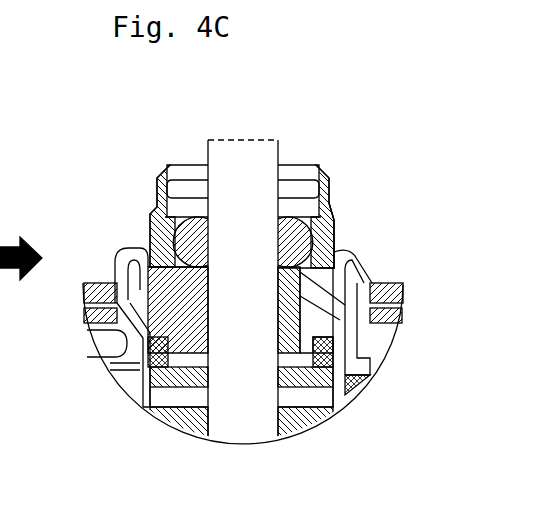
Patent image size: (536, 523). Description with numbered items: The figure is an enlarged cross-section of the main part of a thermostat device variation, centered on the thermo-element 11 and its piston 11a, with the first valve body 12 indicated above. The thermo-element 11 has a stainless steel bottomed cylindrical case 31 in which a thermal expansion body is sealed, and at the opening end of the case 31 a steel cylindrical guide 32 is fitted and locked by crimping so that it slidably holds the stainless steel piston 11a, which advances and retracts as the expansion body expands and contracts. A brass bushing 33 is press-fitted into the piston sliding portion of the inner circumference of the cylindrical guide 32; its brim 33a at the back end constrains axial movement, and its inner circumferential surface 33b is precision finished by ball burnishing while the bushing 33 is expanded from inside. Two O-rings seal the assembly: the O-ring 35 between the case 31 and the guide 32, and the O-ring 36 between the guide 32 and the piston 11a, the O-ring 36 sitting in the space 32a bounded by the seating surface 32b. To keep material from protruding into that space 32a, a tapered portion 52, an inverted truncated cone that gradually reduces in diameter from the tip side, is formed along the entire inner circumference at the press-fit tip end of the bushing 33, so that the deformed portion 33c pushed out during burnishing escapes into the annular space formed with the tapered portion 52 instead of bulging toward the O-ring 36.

The thermo-element 11 is at (356, 392).
The piston 11a is at (255, 158).
The first valve body 12 is at (403, 285).
The bottomed cylindrical case 31 is at (145, 402).
The cylindrical guide 32 is at (293, 166).
The space 32a is at (172, 180).
The seating surface 32b is at (334, 212).
The brass bushing 33 is at (237, 364).
The brim 33a is at (322, 425).
The inner circumferential surface 33b is at (180, 427).
The deformed portion 33c is at (126, 266).
The O-ring 35 is at (108, 364).
The O-ring 36 is at (150, 212).
The tapered portion 52 is at (356, 253).